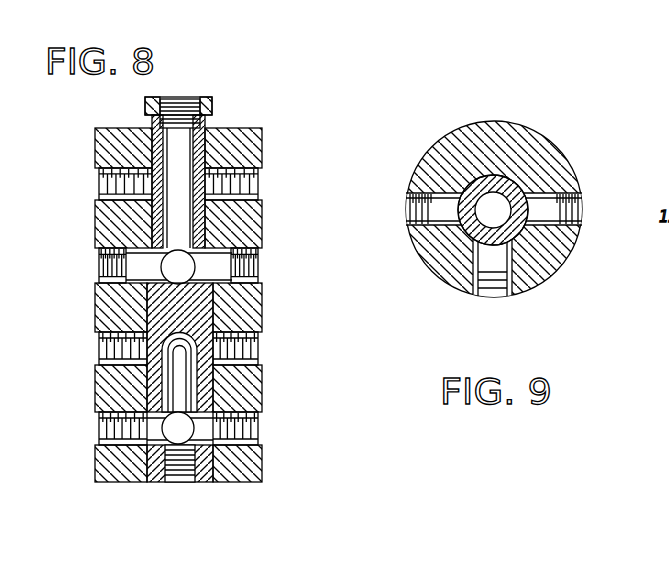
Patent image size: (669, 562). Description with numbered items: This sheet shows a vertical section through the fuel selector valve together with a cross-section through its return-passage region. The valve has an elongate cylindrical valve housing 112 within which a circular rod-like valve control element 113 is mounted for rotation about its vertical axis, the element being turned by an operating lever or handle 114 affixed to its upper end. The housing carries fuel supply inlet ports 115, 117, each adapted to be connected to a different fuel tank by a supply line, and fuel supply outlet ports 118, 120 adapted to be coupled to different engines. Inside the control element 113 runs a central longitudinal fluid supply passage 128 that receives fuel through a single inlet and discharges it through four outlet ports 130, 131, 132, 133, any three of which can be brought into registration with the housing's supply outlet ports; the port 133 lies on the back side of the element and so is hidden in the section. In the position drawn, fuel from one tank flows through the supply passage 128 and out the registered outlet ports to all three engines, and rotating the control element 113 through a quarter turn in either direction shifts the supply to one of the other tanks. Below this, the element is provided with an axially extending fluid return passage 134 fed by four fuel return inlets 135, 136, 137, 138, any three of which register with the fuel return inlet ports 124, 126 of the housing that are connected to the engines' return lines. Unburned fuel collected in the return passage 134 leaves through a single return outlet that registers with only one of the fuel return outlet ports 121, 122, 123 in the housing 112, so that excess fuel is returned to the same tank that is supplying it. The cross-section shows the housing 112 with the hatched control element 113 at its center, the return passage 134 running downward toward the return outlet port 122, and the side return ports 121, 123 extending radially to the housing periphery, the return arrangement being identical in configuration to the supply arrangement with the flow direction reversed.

In FIG. 8, the valve housing 112 is at (258, 128).
In FIG. 9, the valve housing 112 is at (515, 130).
In FIG. 8, the valve control element 113 is at (150, 153).
In FIG. 9, the valve control element 113 is at (508, 190).
In FIG. 8, the operating lever 114 is at (208, 104).
In FIG. 8, the fuel supply inlet port 115 is at (100, 180).
In FIG. 8, the fuel supply inlet port 117 is at (255, 180).
In FIG. 8, the fuel supply outlet port 118 is at (98, 262).
In FIG. 8, the fuel supply outlet port 120 is at (258, 256).
In FIG. 8, the fuel return outlet port 121 is at (100, 352).
In FIG. 9, the fuel return outlet port 121 is at (406, 207).
In FIG. 9, the fuel return outlet port 122 is at (495, 288).
In FIG. 8, the fuel return outlet port 123 is at (260, 350).
In FIG. 9, the fuel return outlet port 123 is at (582, 207).
In FIG. 8, the fuel return inlet port 124 is at (100, 427).
In FIG. 8, the fuel return inlet port 126 is at (258, 425).
In FIG. 8, the fluid supply passage 128 is at (188, 218).
In FIG. 8, the outlet port 130 is at (135, 288).
In FIG. 8, the outlet port 131 is at (252, 347).
In FIG. 8, the outlet port 132 is at (203, 265).
In FIG. 8, the outlet port 133 is at (179, 373).
In FIG. 8, the fluid return passage 134 is at (107, 396).
In FIG. 9, the fluid return passage 134 is at (546, 265).
In FIG. 8, the fuel return inlet 135 is at (105, 456).
In FIG. 8, the fuel return inlet 136 is at (228, 484).
In FIG. 8, the fuel return inlet 137 is at (205, 430).
In FIG. 8, the fuel return inlet 138 is at (182, 447).